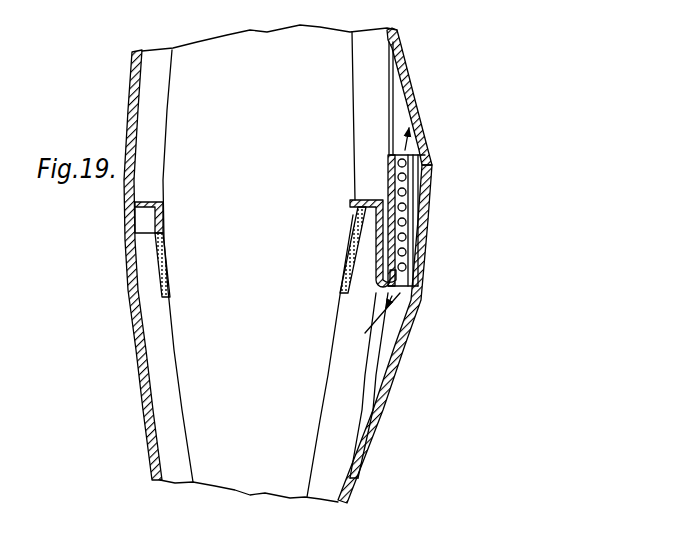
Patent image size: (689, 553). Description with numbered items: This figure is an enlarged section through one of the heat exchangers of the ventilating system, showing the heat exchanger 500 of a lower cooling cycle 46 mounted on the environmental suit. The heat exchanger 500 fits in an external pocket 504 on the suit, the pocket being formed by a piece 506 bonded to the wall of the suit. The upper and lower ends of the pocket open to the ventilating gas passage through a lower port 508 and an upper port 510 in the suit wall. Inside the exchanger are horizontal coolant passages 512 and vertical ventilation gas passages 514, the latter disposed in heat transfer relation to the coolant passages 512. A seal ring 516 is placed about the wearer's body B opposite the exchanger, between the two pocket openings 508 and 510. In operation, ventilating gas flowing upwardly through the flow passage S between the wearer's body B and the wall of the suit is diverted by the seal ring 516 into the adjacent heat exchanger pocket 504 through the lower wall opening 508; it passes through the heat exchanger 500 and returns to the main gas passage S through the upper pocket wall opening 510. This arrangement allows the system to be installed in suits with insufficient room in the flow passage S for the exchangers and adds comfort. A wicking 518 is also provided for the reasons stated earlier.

The lower cooling cycle 46 is at (410, 265).
The heat exchanger 500 is at (446, 160).
The external pocket 504 is at (400, 292).
The piece 506 is at (394, 362).
The port 508 is at (380, 338).
The port 510 is at (405, 110).
The horizontal coolant passages 512 is at (407, 177).
The vertical ventilation gas passages 514 is at (412, 252).
The seal ring 516 is at (145, 223).
The wicking 518 is at (356, 240).
The wearer's body B is at (226, 476).
The flow passage S is at (322, 488).